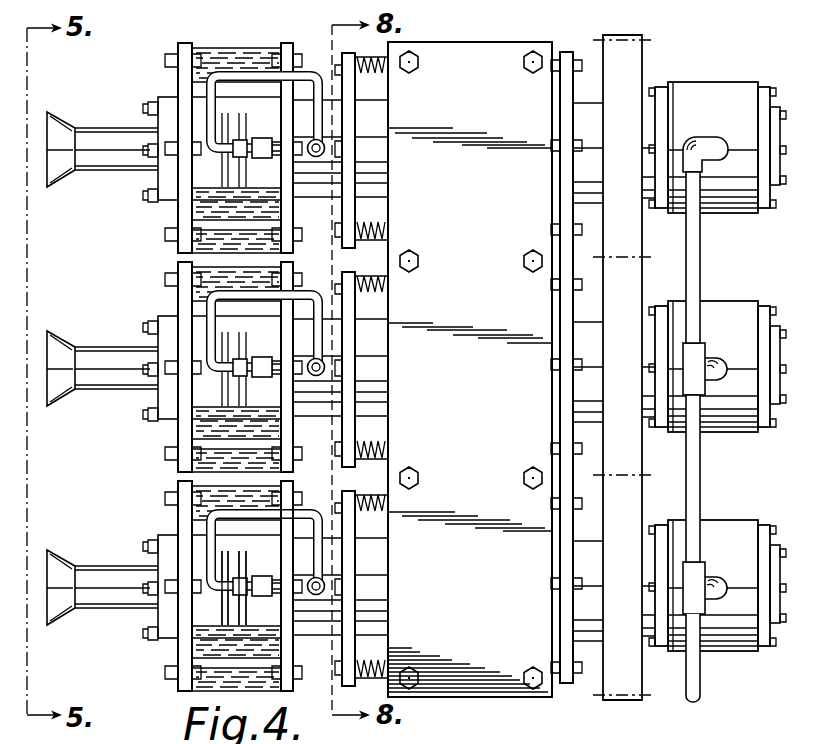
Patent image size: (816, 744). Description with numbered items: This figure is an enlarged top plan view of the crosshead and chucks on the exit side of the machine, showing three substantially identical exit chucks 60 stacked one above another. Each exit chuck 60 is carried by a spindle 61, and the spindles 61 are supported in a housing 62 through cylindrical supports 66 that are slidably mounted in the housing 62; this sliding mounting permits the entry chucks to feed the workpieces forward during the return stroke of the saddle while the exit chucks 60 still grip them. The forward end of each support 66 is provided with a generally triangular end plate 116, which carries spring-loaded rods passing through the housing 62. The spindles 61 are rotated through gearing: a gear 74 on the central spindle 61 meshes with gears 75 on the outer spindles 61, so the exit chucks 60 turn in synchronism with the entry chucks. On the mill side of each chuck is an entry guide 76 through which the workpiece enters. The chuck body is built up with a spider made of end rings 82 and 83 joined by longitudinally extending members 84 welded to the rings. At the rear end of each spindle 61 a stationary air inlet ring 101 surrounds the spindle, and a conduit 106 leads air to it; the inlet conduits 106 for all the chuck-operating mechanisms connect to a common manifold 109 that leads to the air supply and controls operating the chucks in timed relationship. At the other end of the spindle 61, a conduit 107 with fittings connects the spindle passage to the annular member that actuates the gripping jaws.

The exit chuck 60 is at (158, 84).
The spindle 61 is at (321, 190).
The housing 62 is at (470, 369).
The cylindrical support 66 is at (371, 367).
The gear 74 is at (630, 305).
The gear 75 is at (636, 72).
The entry guide 76 is at (60, 135).
The end ring 82 is at (289, 688).
The end ring 83 is at (186, 688).
The longitudinally extending member 84 is at (236, 672).
The air inlet ring 101 is at (718, 95).
The conduit 106 is at (714, 137).
The conduit 107 is at (241, 74).
The manifold 109 is at (703, 248).
The end plate 116 is at (349, 62).